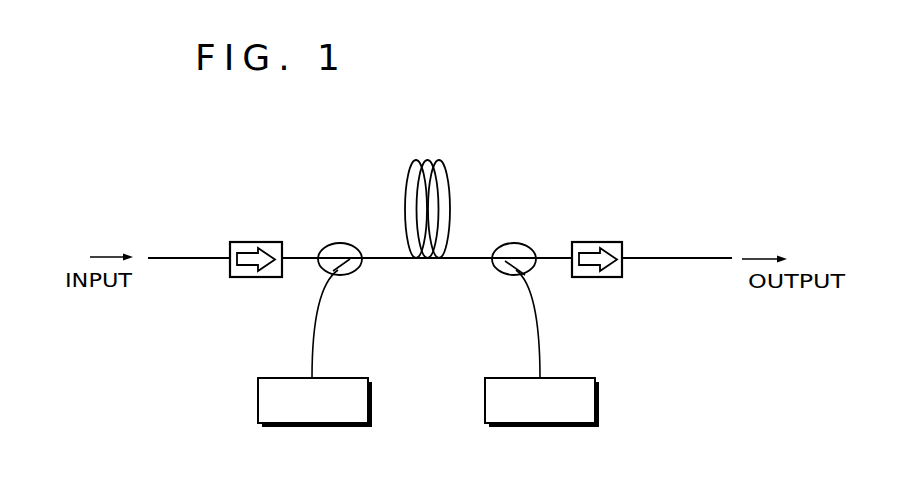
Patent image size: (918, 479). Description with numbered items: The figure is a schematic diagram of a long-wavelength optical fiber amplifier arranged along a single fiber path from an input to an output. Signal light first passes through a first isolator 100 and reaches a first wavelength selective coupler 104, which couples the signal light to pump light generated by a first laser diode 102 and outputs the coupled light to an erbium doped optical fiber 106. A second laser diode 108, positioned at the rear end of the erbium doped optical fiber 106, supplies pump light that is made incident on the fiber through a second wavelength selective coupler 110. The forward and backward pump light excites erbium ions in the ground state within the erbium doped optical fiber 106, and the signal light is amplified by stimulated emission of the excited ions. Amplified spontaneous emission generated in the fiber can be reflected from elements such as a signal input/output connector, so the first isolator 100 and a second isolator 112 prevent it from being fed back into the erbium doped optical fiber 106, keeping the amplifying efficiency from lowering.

The first isolator 100 is at (251, 277).
The first laser diode 102 is at (357, 377).
The first wavelength selective coupler 104 is at (355, 277).
The erbium doped optical fiber 106 is at (449, 210).
The second laser diode 108 is at (575, 377).
The second wavelength selective coupler 110 is at (510, 277).
The second isolator 112 is at (612, 277).